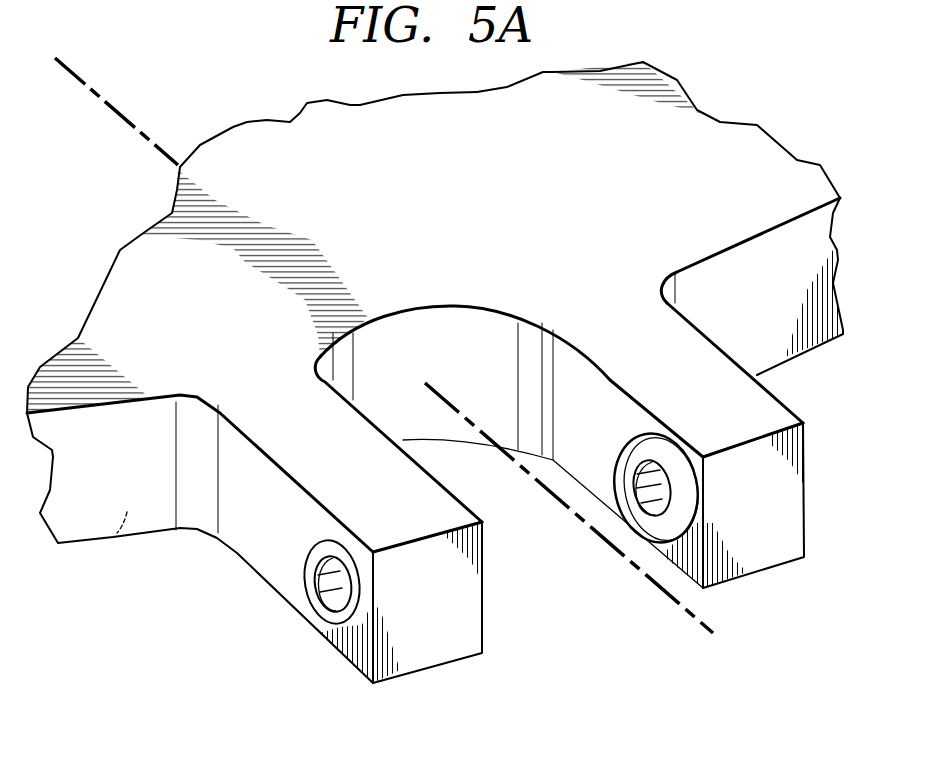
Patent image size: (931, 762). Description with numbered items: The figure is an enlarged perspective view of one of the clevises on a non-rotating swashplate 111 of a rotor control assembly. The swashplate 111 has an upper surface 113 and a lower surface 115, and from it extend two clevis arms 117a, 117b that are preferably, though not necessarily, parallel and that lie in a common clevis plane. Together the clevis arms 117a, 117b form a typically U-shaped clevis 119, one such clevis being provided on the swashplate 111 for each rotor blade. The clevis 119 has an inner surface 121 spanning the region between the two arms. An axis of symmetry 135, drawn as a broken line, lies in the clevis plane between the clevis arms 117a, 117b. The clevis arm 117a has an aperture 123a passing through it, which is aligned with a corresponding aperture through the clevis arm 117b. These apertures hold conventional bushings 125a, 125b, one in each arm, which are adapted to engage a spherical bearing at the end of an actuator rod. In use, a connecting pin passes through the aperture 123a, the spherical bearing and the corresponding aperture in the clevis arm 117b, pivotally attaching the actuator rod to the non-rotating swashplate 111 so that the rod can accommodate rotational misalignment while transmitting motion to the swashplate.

The non-rotating swashplate 111 is at (247, 122).
The upper surface 113 is at (723, 132).
The lower surface 115 is at (117, 538).
The clevis arm 117a is at (427, 662).
The clevis arm 117b is at (767, 560).
The clevis 119 is at (505, 293).
The inner surface 121 is at (383, 323).
The aperture 123a is at (327, 598).
The bushing 125a is at (320, 548).
The bushing 125b is at (620, 478).
The axis of symmetry 135 is at (115, 112).